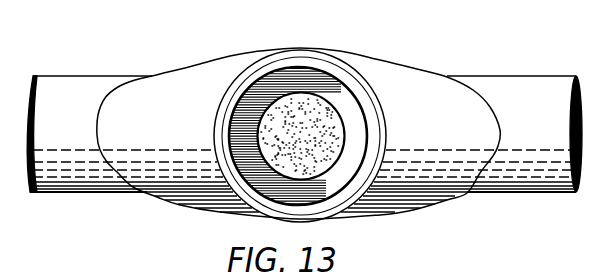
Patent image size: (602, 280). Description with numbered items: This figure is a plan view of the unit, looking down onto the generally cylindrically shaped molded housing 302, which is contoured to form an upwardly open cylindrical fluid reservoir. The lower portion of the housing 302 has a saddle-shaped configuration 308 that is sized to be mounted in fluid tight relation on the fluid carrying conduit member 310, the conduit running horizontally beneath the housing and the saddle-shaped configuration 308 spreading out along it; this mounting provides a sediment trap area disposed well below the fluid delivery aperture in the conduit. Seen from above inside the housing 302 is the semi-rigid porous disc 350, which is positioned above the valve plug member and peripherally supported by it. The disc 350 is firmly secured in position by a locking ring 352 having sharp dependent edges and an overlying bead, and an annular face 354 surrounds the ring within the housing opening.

The molded housing 302 is at (385, 129).
The saddle-shaped configuration 308 is at (168, 90).
The fluid carrying conduit member 310 is at (523, 82).
The semi-rigid porous disc 350 is at (293, 110).
The locking ring 352 is at (320, 82).
The annular face 354 is at (372, 103).